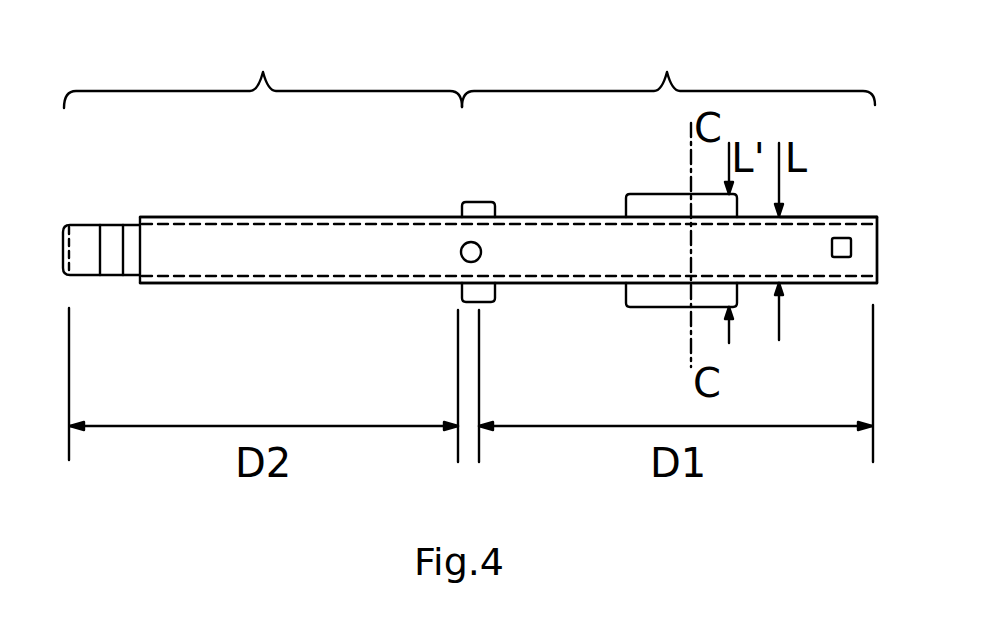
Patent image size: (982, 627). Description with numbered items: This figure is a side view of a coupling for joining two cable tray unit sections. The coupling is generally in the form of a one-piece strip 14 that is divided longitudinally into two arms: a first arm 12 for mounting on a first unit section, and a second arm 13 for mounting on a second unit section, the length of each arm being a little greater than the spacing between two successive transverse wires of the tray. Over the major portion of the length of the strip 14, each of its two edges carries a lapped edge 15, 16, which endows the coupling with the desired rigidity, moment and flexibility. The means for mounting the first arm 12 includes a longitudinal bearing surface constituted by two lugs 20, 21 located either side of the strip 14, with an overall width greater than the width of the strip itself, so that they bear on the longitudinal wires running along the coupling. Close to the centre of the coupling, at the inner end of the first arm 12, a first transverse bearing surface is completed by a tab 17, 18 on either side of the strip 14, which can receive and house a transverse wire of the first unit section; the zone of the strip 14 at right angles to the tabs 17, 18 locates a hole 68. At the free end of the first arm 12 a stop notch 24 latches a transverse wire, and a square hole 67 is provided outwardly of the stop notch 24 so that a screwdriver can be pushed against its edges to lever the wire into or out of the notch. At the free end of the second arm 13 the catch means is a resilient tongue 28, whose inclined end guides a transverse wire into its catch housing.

The first arm 12 is at (668, 67).
The second arm 13 is at (263, 67).
The strip 14 is at (290, 248).
The lapped edge 15 is at (197, 283).
The lapped edge 16 is at (193, 218).
The tab 17 is at (473, 293).
The tab 18 is at (477, 198).
The lug 20 is at (675, 295).
The lug 21 is at (678, 207).
The stop notch 24 is at (827, 213).
The resilient tongue 28 is at (95, 206).
The square hole 67 is at (845, 258).
The hole 68 is at (461, 252).